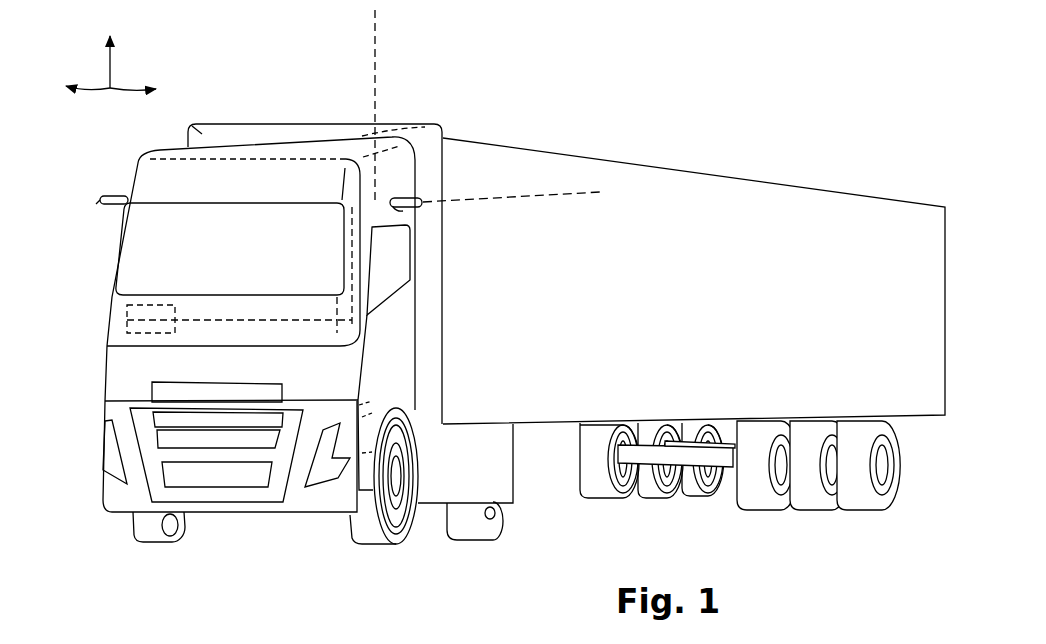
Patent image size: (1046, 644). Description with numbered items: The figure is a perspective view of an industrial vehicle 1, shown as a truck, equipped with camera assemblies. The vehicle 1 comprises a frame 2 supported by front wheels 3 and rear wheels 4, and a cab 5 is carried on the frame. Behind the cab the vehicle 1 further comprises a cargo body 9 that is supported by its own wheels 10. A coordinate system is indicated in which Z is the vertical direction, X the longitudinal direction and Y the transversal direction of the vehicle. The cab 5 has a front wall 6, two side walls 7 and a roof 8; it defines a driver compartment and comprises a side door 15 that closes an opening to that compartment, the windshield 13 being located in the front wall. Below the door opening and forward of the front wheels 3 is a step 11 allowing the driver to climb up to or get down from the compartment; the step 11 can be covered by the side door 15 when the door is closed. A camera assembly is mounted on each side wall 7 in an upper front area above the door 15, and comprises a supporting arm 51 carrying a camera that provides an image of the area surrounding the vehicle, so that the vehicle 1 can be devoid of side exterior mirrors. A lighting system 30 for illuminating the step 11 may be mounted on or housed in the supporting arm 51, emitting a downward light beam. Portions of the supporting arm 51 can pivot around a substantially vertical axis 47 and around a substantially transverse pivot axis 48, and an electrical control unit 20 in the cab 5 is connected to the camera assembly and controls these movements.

The vehicle 1 is at (498, 303).
The frame 2 is at (453, 485).
The front wheels 3 is at (150, 524).
The rear wheels 4 is at (492, 527).
The cab 5 is at (287, 106).
The front wall 6 is at (146, 354).
The side wall 7 is at (430, 305).
The roof 8 is at (320, 147).
The cargo body 9 is at (840, 237).
The wheels 10 is at (887, 497).
The step 11 is at (379, 403).
The windshield 13 is at (272, 263).
The side door 15 is at (388, 344).
The electrical control unit 20 is at (146, 320).
The lighting system 30 is at (91, 207).
The vertical axis 47 is at (377, 25).
The pivot axis 48 is at (546, 192).
The supporting arm 51 is at (408, 199).